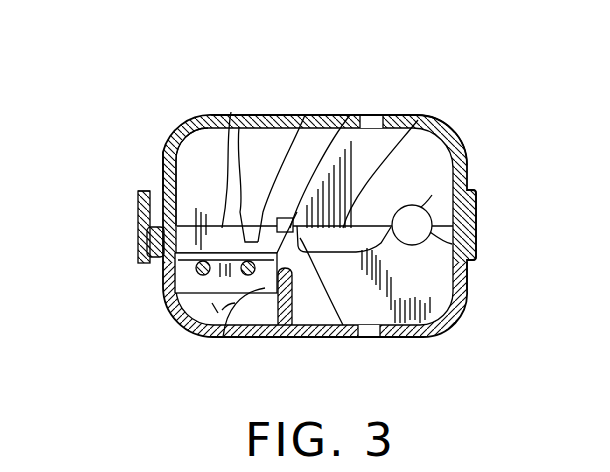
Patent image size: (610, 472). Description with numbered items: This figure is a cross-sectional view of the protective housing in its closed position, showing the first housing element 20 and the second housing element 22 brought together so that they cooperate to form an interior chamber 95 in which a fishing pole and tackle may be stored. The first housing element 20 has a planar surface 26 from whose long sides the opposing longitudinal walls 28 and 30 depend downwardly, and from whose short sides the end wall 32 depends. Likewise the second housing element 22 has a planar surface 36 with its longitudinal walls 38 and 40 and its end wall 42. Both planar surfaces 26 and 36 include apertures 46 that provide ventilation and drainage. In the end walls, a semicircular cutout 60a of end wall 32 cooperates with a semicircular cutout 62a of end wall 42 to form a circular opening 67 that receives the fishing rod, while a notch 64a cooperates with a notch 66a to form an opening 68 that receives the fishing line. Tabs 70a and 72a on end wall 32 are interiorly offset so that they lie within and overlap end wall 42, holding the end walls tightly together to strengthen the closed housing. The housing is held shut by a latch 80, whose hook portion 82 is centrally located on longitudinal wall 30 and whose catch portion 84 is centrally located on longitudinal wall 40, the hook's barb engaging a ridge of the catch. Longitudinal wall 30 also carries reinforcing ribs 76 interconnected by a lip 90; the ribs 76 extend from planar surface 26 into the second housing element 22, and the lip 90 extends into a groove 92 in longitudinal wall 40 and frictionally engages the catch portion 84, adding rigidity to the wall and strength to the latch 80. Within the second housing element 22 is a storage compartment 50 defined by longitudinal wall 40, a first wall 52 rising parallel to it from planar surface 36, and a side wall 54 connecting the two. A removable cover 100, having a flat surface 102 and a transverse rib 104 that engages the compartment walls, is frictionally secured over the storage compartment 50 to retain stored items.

The first housing element 20 is at (470, 127).
The second housing element 22 is at (470, 313).
The planar surface 26 is at (239, 127).
The longitudinal wall 28 is at (465, 148).
The longitudinal wall 30 is at (152, 178).
The end wall 32 is at (305, 115).
The planar surface 36 is at (305, 325).
The longitudinal wall 38 is at (470, 272).
The longitudinal wall 40 is at (183, 272).
The end wall 42 is at (427, 287).
The apertures 46 is at (372, 115).
The storage compartment 50 is at (202, 307).
The first wall 52 is at (261, 322).
The side wall 54 is at (205, 307).
The semicircular cutout 60a is at (432, 195).
The semicircular cutout 62a is at (468, 250).
The notch 64a is at (297, 226).
The notch 66a is at (343, 325).
The circular opening 67 is at (417, 223).
The opening 68 is at (348, 180).
The tab 70a is at (413, 160).
The tab 72a is at (231, 112).
The reinforcing ribs 76 is at (186, 162).
The latch 80 is at (126, 223).
The hook portion 82 is at (137, 211).
The catch portion 84 is at (150, 270).
The lip 90 is at (186, 168).
The groove 92 is at (185, 262).
The interior chamber 95 is at (415, 158).
The removable cover 100 is at (200, 307).
The flat surface 102 is at (209, 228).
The transverse rib 104 is at (222, 310).